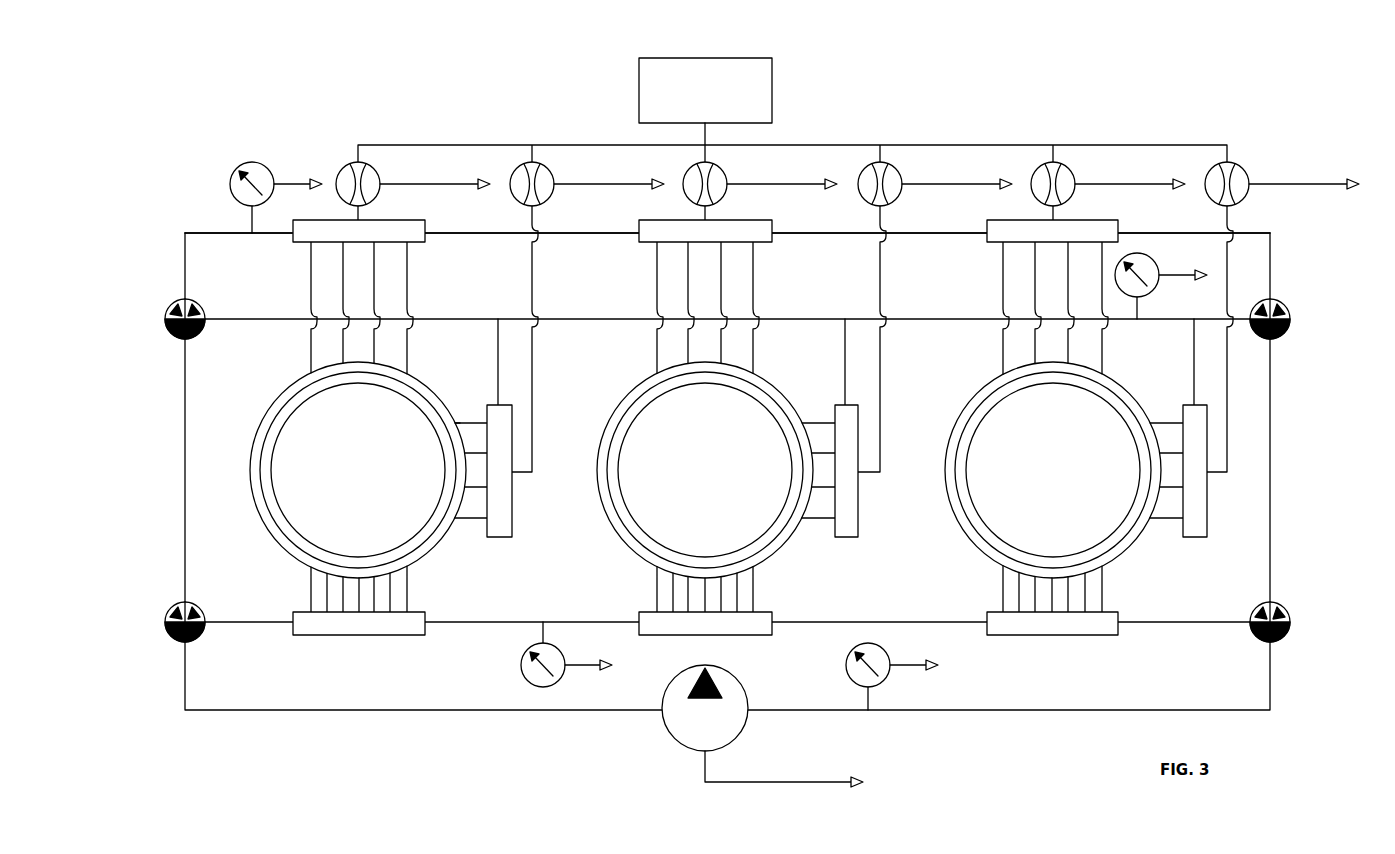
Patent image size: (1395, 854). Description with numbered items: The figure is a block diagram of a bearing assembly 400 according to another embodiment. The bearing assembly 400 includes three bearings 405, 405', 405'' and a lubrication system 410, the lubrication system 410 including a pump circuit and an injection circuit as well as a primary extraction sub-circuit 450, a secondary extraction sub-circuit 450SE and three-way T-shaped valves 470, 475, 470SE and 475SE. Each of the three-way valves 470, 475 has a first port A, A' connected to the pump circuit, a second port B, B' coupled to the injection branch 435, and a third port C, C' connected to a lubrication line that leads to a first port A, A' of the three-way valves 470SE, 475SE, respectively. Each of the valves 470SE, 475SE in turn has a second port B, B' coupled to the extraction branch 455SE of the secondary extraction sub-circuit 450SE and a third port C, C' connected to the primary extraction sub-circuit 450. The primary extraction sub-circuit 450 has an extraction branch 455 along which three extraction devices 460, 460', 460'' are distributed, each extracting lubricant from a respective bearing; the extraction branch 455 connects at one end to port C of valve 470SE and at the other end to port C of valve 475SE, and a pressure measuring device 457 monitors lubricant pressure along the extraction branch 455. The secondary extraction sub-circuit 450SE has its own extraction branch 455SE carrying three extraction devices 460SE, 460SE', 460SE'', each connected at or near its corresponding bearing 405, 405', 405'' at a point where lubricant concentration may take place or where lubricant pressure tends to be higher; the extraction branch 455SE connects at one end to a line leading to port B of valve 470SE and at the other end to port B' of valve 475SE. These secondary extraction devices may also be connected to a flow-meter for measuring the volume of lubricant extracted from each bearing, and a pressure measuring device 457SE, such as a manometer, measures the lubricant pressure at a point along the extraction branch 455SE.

The bearing assembly 400 is at (1140, 70).
The bearing 405 is at (358, 470).
The bearing 405' is at (705, 470).
The bearing 405'' is at (1053, 470).
The lubrication system 410 is at (462, 755).
The injection branch 435 is at (252, 622).
The primary extraction sub-circuit 450 is at (283, 248).
The secondary extraction sub-circuit 450SE is at (470, 543).
The extraction branch 455 is at (185, 246).
The extraction branch 455SE is at (250, 318).
The pressure measuring device 457 is at (240, 170).
The pressure measuring device 457SE is at (1153, 265).
The extraction device 460 is at (379, 427).
The extraction device 460' is at (678, 427).
The extraction device 460'' is at (1021, 427).
The extraction device 460SE is at (530, 383).
The extraction device 460SE' is at (876, 383).
The extraction device 460SE'' is at (1182, 391).
The 3-way T-shaped valve 470 is at (170, 638).
The 3-way valve 470SE is at (168, 340).
The 3-way T-shaped valve 475 is at (1290, 638).
The 3-way valve 475SE is at (1290, 333).